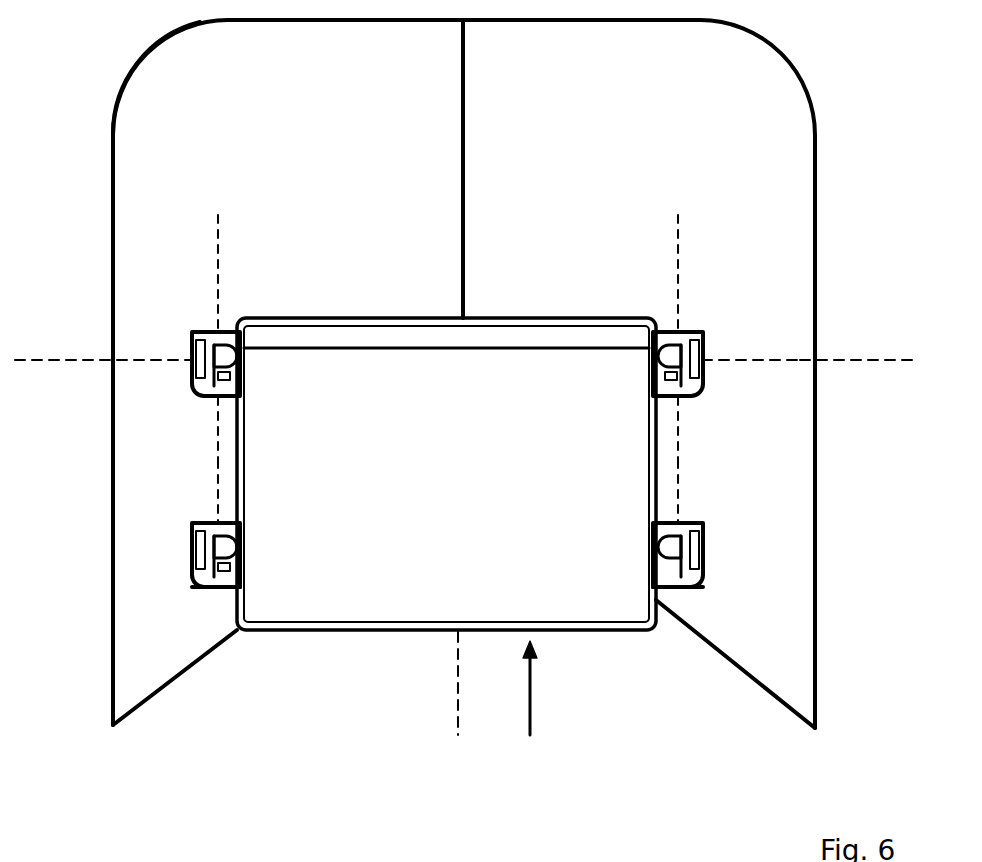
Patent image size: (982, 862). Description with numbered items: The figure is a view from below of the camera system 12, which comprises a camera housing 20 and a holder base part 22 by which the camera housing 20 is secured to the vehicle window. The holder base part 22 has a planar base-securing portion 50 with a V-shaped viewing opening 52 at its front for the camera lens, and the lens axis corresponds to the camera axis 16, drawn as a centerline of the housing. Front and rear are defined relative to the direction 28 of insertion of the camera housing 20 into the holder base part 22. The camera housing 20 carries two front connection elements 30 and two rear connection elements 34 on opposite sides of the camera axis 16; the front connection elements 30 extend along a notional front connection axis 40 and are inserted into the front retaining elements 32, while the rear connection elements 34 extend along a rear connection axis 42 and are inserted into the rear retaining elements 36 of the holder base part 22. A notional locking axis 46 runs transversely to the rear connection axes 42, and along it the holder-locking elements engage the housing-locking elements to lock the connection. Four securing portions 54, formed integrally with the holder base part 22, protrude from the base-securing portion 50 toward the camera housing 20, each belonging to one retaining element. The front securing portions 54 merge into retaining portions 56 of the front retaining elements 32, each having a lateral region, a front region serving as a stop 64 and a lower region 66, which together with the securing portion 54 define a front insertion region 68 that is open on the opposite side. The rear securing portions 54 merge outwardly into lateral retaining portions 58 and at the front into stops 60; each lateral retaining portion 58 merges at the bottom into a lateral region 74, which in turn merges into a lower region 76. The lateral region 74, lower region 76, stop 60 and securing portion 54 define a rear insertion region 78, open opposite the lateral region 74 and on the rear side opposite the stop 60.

The camera system 12 is at (436, 371).
The camera axis 16 is at (456, 695).
The camera housing 20 is at (318, 632).
The holder base part 22 is at (797, 77).
The direction of insertion 28 is at (534, 693).
The front connection element 30 is at (243, 562).
The front retaining element 32 is at (192, 552).
The rear connection element 34 is at (242, 368).
The rear retaining element 36 is at (192, 346).
The front connection axis 40 is at (218, 492).
The rear connection axis 42 is at (218, 212).
The locking axis 46 is at (20, 365).
The base-securing portion 50 is at (135, 150).
The viewing opening 52 is at (487, 705).
The securing portion 54 is at (195, 365).
The retaining portion 56 is at (200, 588).
The lateral retaining portion 58 is at (197, 375).
The stop 60 is at (218, 415).
The stop 64 is at (215, 597).
The lower region 66 is at (205, 598).
The front insertion region 68 is at (242, 542).
The lateral region 74 is at (702, 350).
The lower region 76 is at (195, 332).
The rear insertion region 78 is at (228, 332).